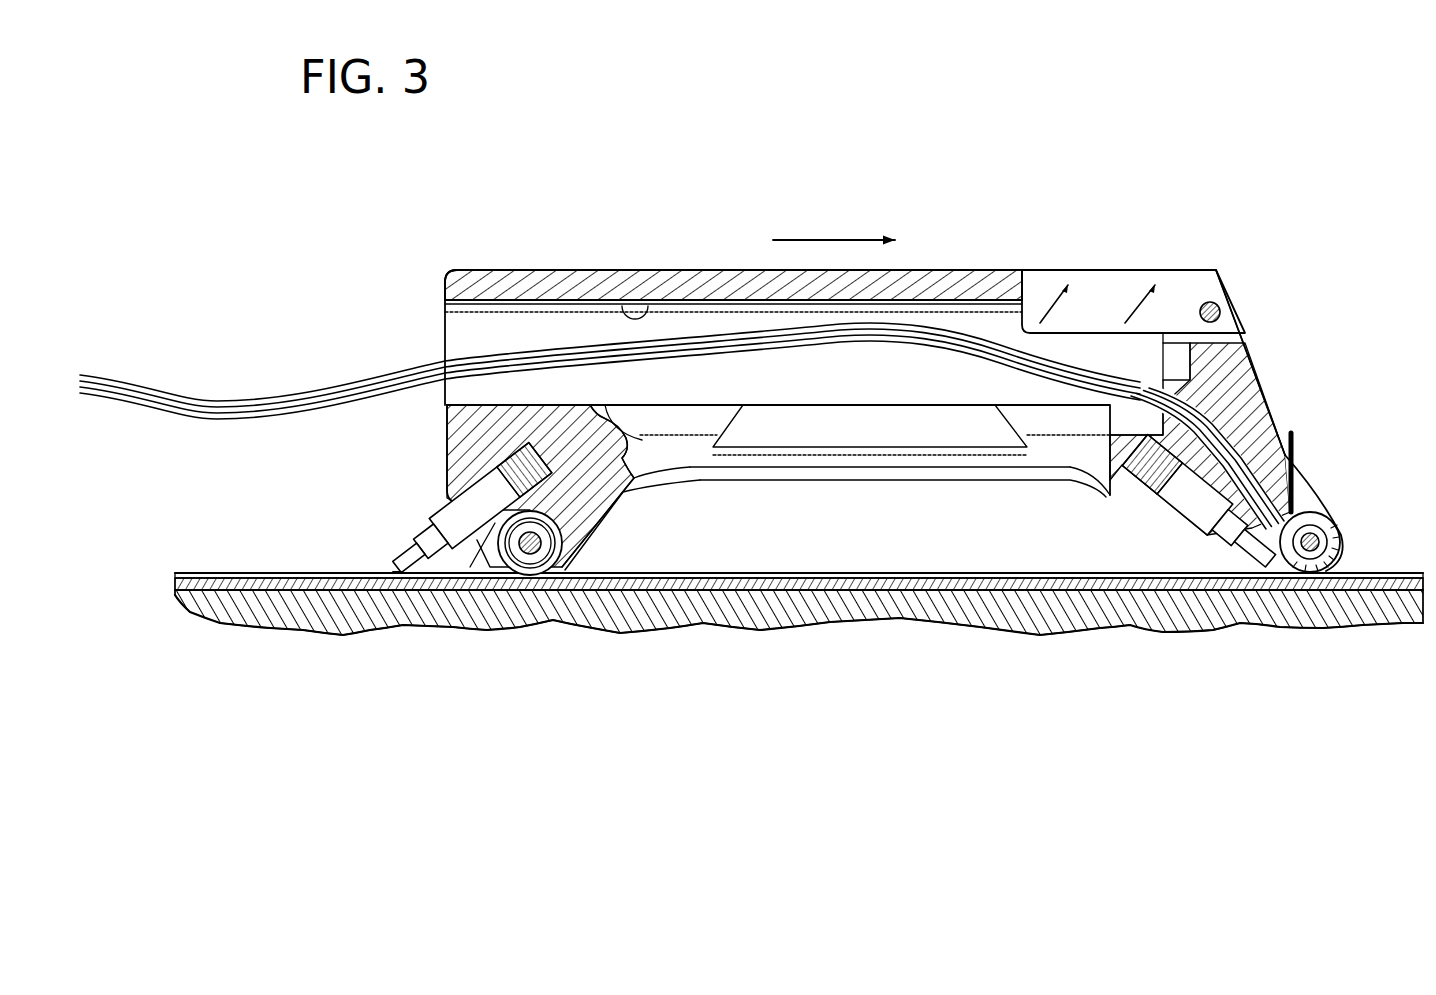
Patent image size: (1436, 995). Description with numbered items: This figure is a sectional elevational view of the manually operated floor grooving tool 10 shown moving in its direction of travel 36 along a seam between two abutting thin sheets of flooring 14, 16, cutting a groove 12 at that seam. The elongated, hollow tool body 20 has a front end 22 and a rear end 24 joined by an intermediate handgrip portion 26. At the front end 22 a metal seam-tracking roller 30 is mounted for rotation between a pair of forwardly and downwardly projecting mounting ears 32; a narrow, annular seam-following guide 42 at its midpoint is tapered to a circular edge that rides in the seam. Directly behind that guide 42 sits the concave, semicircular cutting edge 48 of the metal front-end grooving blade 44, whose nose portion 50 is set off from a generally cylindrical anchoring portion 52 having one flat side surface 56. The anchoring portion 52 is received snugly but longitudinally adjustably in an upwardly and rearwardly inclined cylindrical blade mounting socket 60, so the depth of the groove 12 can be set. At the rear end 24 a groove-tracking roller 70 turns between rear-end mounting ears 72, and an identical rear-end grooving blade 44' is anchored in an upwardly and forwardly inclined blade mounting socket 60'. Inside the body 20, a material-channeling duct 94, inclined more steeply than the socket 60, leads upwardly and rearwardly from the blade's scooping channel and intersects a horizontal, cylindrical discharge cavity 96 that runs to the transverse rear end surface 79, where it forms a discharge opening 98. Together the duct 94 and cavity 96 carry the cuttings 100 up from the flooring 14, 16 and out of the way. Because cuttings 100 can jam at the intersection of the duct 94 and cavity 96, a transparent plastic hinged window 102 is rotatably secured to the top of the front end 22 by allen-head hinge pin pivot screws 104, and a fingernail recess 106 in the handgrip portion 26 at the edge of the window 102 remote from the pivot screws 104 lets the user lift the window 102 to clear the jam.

The floor grooving tool 10 is at (966, 192).
The groove 12 is at (948, 565).
The sheet of flooring 14 is at (748, 566).
The sheet of flooring 16 is at (748, 566).
The body 20 is at (700, 262).
The front end 22 is at (1255, 365).
The rear end 24 is at (547, 270).
The intermediate handgrip portion 26 is at (945, 268).
The seam-tracking roller 30 is at (1345, 522).
The mounting ears 32 is at (1295, 468).
The direction of travel 36 is at (822, 240).
The seam-following guide 42 is at (550, 578).
The front-end grooving blade 44 is at (1145, 553).
The rear-end grooving blade 44' is at (367, 497).
The cutting edge 48 is at (395, 572).
The nose portion 50 is at (398, 548).
The anchoring portion 52 is at (465, 490).
The flat side surface 56 is at (1207, 507).
The blade mounting socket 60 is at (1105, 475).
The blade mounting socket 60' is at (465, 460).
The groove-tracking roller 70 is at (560, 545).
The rear-end mounting ears 72 is at (472, 560).
The rear end surface 79 is at (440, 413).
The material-channeling duct 94 is at (1280, 405).
The discharge cavity 96 is at (625, 270).
The discharge opening 98 is at (440, 330).
The cuttings 100 is at (225, 395).
The hinged window 102 is at (1173, 270).
The hinge pin pivot screws 104 is at (1220, 305).
The fingernail recess 106 is at (1042, 272).